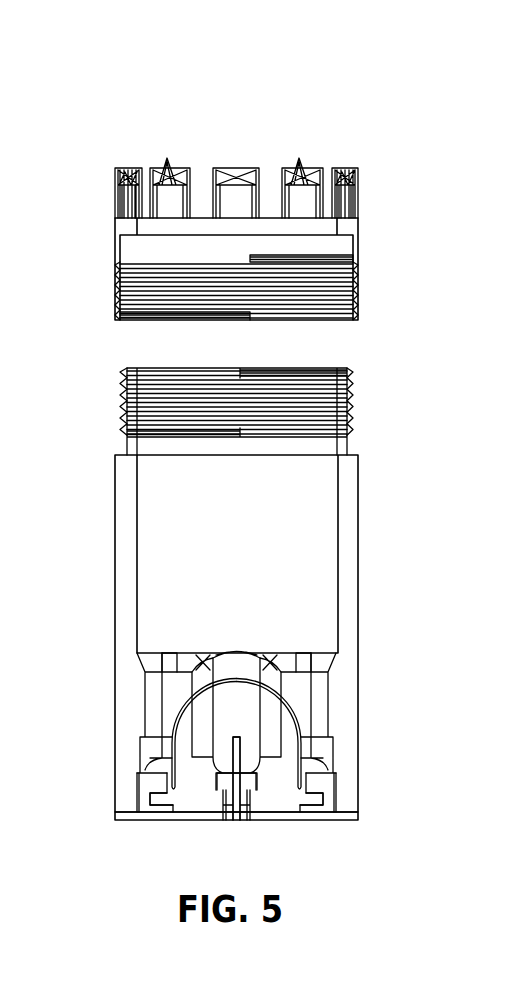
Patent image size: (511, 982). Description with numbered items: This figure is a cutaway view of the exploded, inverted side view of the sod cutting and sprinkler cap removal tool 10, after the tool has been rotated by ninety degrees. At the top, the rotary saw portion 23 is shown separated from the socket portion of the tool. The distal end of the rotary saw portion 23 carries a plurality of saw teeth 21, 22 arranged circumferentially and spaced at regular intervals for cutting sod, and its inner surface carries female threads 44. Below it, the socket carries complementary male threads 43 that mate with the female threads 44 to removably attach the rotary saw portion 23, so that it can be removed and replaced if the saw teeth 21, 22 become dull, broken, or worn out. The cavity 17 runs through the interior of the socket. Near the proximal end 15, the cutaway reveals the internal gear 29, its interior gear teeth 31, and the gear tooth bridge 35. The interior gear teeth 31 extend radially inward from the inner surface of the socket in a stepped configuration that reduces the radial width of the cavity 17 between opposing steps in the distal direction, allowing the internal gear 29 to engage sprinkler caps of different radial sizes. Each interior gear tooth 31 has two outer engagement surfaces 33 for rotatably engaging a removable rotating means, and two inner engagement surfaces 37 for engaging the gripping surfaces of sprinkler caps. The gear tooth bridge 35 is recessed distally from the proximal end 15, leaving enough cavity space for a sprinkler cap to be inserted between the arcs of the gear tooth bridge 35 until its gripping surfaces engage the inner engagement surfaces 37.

The sod cutting and sprinkler cap removal tool 10 is at (258, 42).
The proximal end 15 is at (386, 816).
The cavity 17 is at (323, 519).
The saw teeth 21 is at (158, 165).
The saw teeth 22 is at (254, 172).
The rotary saw portion 23 is at (358, 250).
The internal gear 29 is at (239, 645).
The interior gear teeth 31 is at (172, 805).
The outer engagement surfaces 33 is at (167, 692).
The gear tooth bridge 35 is at (180, 670).
The inner engagement surfaces 37 is at (147, 784).
The male threads 43 is at (104, 406).
The female threads 44 is at (331, 324).